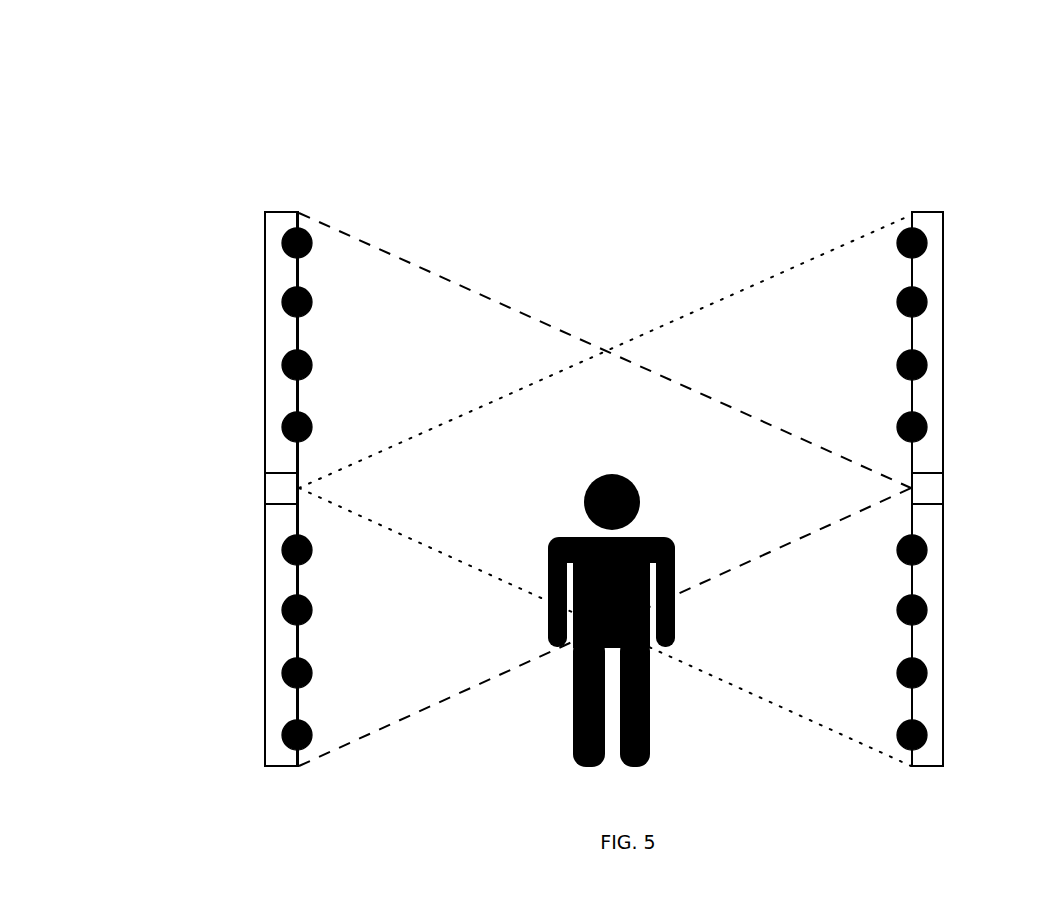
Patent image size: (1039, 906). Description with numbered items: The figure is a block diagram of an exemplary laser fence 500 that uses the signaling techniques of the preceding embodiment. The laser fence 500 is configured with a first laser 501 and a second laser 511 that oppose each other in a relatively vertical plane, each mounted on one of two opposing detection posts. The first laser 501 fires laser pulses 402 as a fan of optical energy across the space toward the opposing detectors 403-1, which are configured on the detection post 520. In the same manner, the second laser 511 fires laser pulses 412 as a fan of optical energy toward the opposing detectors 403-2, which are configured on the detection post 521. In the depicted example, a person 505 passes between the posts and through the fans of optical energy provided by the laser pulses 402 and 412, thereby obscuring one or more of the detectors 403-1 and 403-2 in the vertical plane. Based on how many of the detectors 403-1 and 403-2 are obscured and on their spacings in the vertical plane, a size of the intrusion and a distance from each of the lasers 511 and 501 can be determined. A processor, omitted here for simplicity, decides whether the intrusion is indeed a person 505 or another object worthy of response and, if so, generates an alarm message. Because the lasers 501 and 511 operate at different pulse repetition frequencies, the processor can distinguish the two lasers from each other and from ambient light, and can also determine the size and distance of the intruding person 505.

The laser fence 500 is at (630, 153).
The laser pulses 402 is at (455, 350).
The laser pulses 412 is at (762, 318).
The detectors 403-1 is at (290, 610).
The detectors 403-2 is at (920, 365).
The second laser 511 is at (265, 488).
The first laser 501 is at (943, 487).
The detection post 520 is at (293, 212).
The detection post 521 is at (925, 212).
The person 505 is at (628, 478).